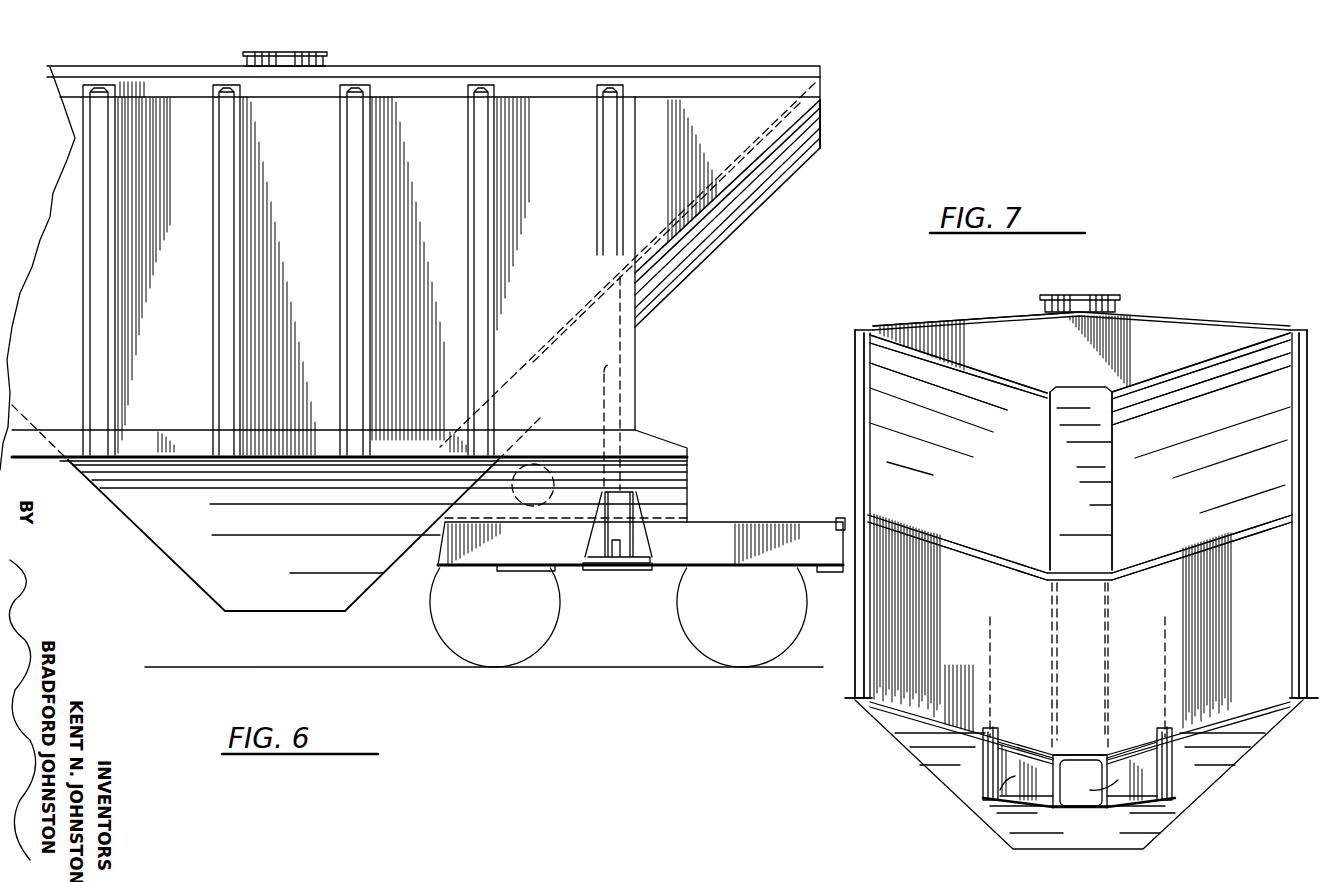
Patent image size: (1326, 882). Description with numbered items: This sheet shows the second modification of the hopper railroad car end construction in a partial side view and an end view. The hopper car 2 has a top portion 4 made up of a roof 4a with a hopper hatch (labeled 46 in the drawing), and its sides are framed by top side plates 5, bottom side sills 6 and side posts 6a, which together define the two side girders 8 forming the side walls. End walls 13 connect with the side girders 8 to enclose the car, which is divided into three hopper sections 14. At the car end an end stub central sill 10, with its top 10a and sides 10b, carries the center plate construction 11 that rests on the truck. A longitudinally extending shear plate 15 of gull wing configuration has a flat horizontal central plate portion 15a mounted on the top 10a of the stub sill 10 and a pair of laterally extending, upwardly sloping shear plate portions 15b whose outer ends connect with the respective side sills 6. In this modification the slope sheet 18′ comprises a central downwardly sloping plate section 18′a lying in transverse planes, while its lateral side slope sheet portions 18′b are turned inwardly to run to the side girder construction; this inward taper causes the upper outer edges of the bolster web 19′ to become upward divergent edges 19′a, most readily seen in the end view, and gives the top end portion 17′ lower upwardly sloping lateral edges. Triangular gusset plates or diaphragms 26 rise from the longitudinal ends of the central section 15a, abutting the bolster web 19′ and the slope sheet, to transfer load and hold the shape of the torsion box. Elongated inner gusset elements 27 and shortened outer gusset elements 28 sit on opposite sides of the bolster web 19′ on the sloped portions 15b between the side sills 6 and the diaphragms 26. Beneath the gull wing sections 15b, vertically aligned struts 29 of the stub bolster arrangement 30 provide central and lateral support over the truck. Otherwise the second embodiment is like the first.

In FIG. 7, the hopper car 2 is at (1258, 260).
In FIG. 6, the top portion 4 is at (808, 57).
In FIG. 7, the top portion 4 is at (905, 322).
In FIG. 6, the roof 4a is at (510, 66).
In FIG. 7, the roof 4a is at (1157, 314).
In FIG. 6, the top side plates 5 is at (318, 92).
In FIG. 7, the top side plates 5 is at (868, 330).
In FIG. 6, the bottom side sills 6 is at (196, 448).
In FIG. 7, the bottom side sills 6 is at (852, 698).
In FIG. 7, the side posts 6a is at (856, 430).
In FIG. 6, the side girders 8 is at (302, 226).
In FIG. 7, the side girders 8 is at (1288, 503).
In FIG. 6, the end stub central sill 10 is at (760, 521).
In FIG. 7, the end stub central sill 10 is at (1107, 790).
In FIG. 6, the top of stub sill 10a is at (802, 520).
In FIG. 7, the top of stub sill 10a is at (1085, 760).
In FIG. 6, the sides of stub sill 10b is at (812, 560).
In FIG. 7, the sides of stub sill 10b is at (1053, 772).
In FIG. 6, the center plate construction 11 is at (617, 571).
In FIG. 6, the end walls 13 is at (826, 132).
In FIG. 7, the end walls 13 is at (1178, 404).
In FIG. 6, the hopper sections 14 is at (197, 588).
In FIG. 7, the hopper sections 14 is at (1197, 795).
In FIG. 6, the shear plate means 15 is at (692, 468).
In FIG. 7, the shear plate means 15 is at (1190, 726).
In FIG. 7, the central plate portion 15a is at (1068, 758).
In FIG. 6, the gull wing shear plate portions 15b is at (690, 492).
In FIG. 7, the gull wing shear plate portions 15b is at (940, 715).
In FIG. 6, the top end portion 17′ is at (826, 106).
In FIG. 7, the top end portion 17′ is at (1021, 330).
In FIG. 6, the slope sheet 18′ is at (697, 268).
In FIG. 7, the slope sheet 18′ is at (1008, 400).
In FIG. 6, the central downwardly sloping plate section 18′a is at (722, 245).
In FIG. 7, the central downwardly sloping plate section 18′a is at (1108, 452).
In FIG. 6, the lateral side slope sheet portions 18′b is at (790, 175).
In FIG. 7, the lateral side slope sheet portions 18′b is at (957, 372).
In FIG. 6, the bolster web 19′ is at (640, 394).
In FIG. 7, the bolster web 19′ is at (1145, 577).
In FIG. 7, the upward divergent edges 19′a is at (963, 542).
In FIG. 7, the gusset plates or diaphragms 26 is at (1101, 605).
In FIG. 6, the elongated inner gusset elements 27 is at (604, 400).
In FIG. 7, the elongated inner gusset elements 27 is at (992, 647).
In FIG. 6, the shortened outer gusset elements 28 is at (633, 470).
In FIG. 7, the shortened outer gusset elements 28 is at (990, 716).
In FIG. 6, the vertical struts 29 is at (636, 500).
In FIG. 7, the vertical struts 29 is at (988, 757).
In FIG. 6, the stub bolster arrangement 30 is at (657, 538).
In FIG. 7, the stub bolster arrangement 30 is at (1166, 807).
In FIG. 6, the hatch 46 is at (324, 53).
In FIG. 7, the hatch 46 is at (1090, 297).